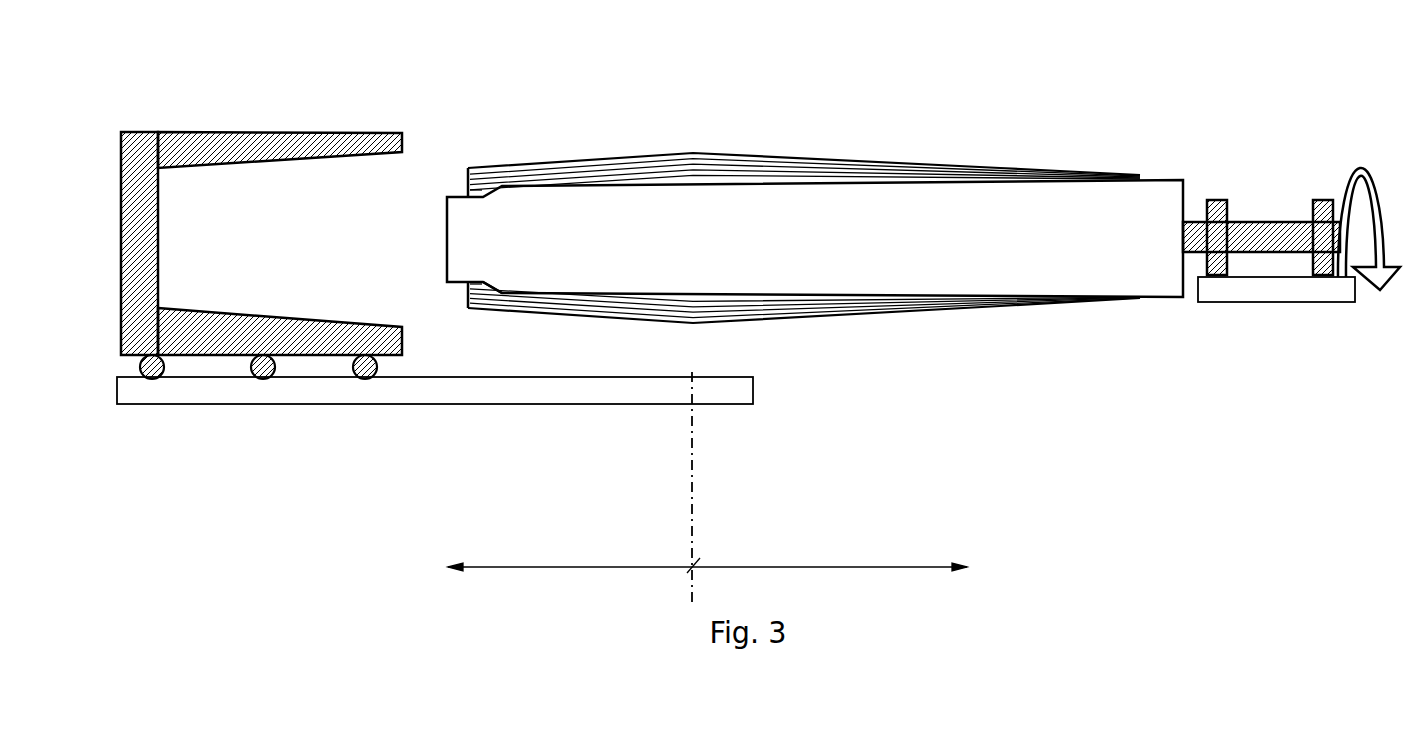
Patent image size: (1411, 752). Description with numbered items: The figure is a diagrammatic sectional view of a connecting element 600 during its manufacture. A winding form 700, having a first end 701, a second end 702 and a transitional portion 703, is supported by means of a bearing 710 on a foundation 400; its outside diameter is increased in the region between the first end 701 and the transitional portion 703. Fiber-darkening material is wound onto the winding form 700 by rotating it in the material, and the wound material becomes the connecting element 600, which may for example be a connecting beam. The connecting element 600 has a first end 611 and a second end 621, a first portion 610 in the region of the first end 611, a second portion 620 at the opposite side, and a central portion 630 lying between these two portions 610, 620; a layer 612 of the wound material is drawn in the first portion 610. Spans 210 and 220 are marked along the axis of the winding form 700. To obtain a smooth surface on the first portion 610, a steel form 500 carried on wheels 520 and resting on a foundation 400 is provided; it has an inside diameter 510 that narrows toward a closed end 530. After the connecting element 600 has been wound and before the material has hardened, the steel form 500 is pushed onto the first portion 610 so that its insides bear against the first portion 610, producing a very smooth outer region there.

The first region of mandrel 210 is at (570, 553).
The second region of mandrel 220 is at (827, 554).
The foundation 400 is at (237, 393).
The steel form 500 is at (226, 254).
The inside diameter 510 is at (270, 158).
The wheels 520 is at (365, 378).
The closed end 530 is at (120, 242).
The connecting element 600 is at (805, 210).
The first portion 610 is at (465, 176).
The first end 611 is at (490, 178).
The inner layer 612 is at (592, 158).
The second portion 620 is at (1080, 173).
The second end 621 is at (1162, 195).
The central portion 630 is at (693, 152).
The winding form 700 is at (839, 254).
The first end 701 is at (455, 243).
The second end 702 is at (1180, 278).
The transitional portion 703 is at (502, 293).
The bearing 710 is at (1270, 182).